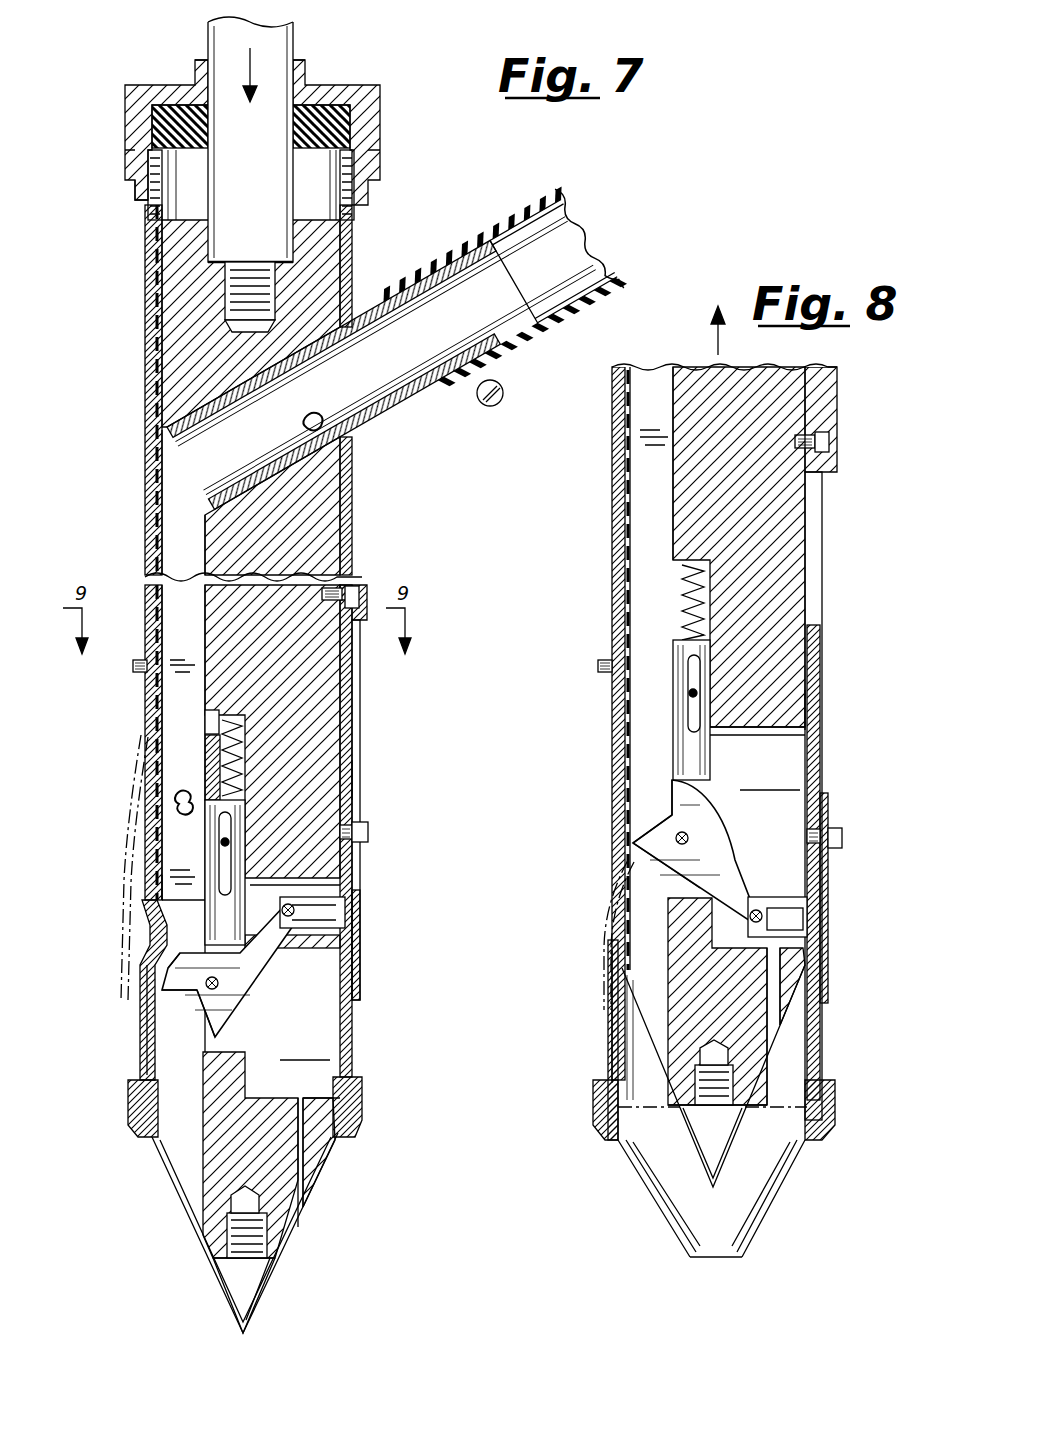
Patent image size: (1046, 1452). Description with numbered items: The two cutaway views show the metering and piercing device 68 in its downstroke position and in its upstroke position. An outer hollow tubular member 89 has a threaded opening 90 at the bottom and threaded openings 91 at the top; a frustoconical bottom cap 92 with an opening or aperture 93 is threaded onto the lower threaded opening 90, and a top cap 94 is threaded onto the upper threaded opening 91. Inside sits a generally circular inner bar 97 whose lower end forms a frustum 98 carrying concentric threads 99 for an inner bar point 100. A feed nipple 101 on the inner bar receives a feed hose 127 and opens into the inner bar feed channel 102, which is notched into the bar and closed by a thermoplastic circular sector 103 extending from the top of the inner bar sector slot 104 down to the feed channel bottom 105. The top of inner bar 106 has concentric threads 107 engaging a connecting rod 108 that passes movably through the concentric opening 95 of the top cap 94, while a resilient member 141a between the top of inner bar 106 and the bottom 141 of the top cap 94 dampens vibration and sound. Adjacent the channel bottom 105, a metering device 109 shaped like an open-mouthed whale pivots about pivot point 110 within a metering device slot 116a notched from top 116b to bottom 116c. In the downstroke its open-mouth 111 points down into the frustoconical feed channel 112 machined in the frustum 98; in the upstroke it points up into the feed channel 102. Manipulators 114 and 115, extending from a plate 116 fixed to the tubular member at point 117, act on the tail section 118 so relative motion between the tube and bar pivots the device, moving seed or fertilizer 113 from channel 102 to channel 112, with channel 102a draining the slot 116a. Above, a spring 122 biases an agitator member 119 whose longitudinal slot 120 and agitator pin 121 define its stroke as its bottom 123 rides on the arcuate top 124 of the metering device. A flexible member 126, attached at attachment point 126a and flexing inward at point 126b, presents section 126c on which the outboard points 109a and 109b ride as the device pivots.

In FIG. 7, the metering and piercing device 68 is at (362, 765).
In FIG. 7, the outer hollow tubular member 89 is at (352, 540).
In FIG. 8, the outer hollow tubular member 89 is at (820, 672).
In FIG. 7, the threaded opening 90 is at (335, 1113).
In FIG. 7, the threaded openings 91 is at (358, 222).
In FIG. 7, the bottom cap 92 is at (362, 1142).
In FIG. 8, the bottom cap 92 is at (645, 1225).
In FIG. 8, the opening or aperture 93 is at (716, 1260).
In FIG. 7, the top cap 94 is at (378, 145).
In FIG. 7, the concentric opening 95 is at (300, 58).
In FIG. 7, the inner bar 97 is at (330, 492).
In FIG. 8, the inner bar 97 is at (800, 560).
In FIG. 7, the frustum 98 is at (285, 1254).
In FIG. 7, the concentric threads 99 is at (268, 1232).
In FIG. 7, the inner bar point 100 is at (262, 1297).
In FIG. 8, the inner bar point 100 is at (700, 1160).
In FIG. 7, the feed nipple 101 is at (410, 395).
In FIG. 7, the inner bar feed channel 102 is at (185, 490).
In FIG. 8, the inner bar feed channel 102 is at (650, 570).
In FIG. 7, the drain channel 102a is at (305, 1207).
In FIG. 7, the circular sector 103 is at (155, 525).
In FIG. 8, the circular sector 103 is at (625, 512).
In FIG. 7, the top of inner bar sector slot 104 is at (152, 222).
In FIG. 7, the inner bar feed channel bottom 105 is at (160, 900).
In FIG. 7, the top of inner bar 106 is at (148, 205).
In FIG. 7, the concentric threads 107 is at (225, 300).
In FIG. 7, the connecting rod 108 is at (298, 25).
In FIG. 7, the metering device 109 is at (240, 1022).
In FIG. 8, the metering device 109 is at (690, 880).
In FIG. 7, the metering device outboard point 109a is at (165, 990).
In FIG. 8, the metering device outboard point 109a is at (660, 802).
In FIG. 7, the metering device outboard point 109b is at (222, 1045).
In FIG. 8, the metering device outboard point 109b is at (676, 838).
In FIG. 7, the pivot point 110 is at (219, 984).
In FIG. 8, the pivot point 110 is at (678, 840).
In FIG. 7, the open-mouth 111 is at (200, 1015).
In FIG. 8, the open-mouth 111 is at (660, 823).
In FIG. 7, the frustoconical feed channel 112 is at (185, 1160).
In FIG. 7, the feed material 113 is at (322, 428).
In FIG. 7, the manipulator 114 is at (322, 940).
In FIG. 8, the manipulator 114 is at (810, 920).
In FIG. 7, the manipulator 115 is at (300, 912).
In FIG. 8, the manipulator 115 is at (763, 913).
In FIG. 7, the plate 116 is at (362, 930).
In FIG. 8, the plate 116 is at (828, 960).
In FIG. 7, the metering device slot 116a is at (300, 1060).
In FIG. 8, the metering device slot 116a is at (775, 800).
In FIG. 7, the top of metering device slot 116b is at (355, 790).
In FIG. 8, the top of metering device slot 116b is at (795, 705).
In FIG. 7, the bottom of metering device slot 116c is at (330, 1100).
In FIG. 7, the attachment point 117 is at (370, 832).
In FIG. 8, the attachment point 117 is at (843, 836).
In FIG. 7, the tail section 118 is at (305, 900).
In FIG. 8, the agitator member 119 is at (683, 770).
In FIG. 7, the longitudinal slot 120 is at (225, 872).
In FIG. 8, the longitudinal slot 120 is at (690, 722).
In FIG. 8, the agitator pin 121 is at (690, 695).
In FIG. 8, the spring 122 is at (812, 582).
In FIG. 8, the bottom of agitator 123 is at (770, 778).
In FIG. 8, the top of metering device 124 is at (780, 812).
In FIG. 7, the flexible member 126 is at (124, 868).
In FIG. 7, the attachment point 126a is at (133, 666).
In FIG. 8, the attachment point 126a is at (598, 668).
In FIG. 7, the flex point 126b is at (155, 935).
In FIG. 8, the flex point 126b is at (612, 935).
In FIG. 7, the flexible member section 126c is at (150, 975).
In FIG. 8, the flexible member section 126c is at (612, 980).
In FIG. 7, the feed hose 127 is at (600, 290).
In FIG. 7, the bottom of top cap 141 is at (350, 98).
In FIG. 7, the resilient member 141a is at (365, 118).